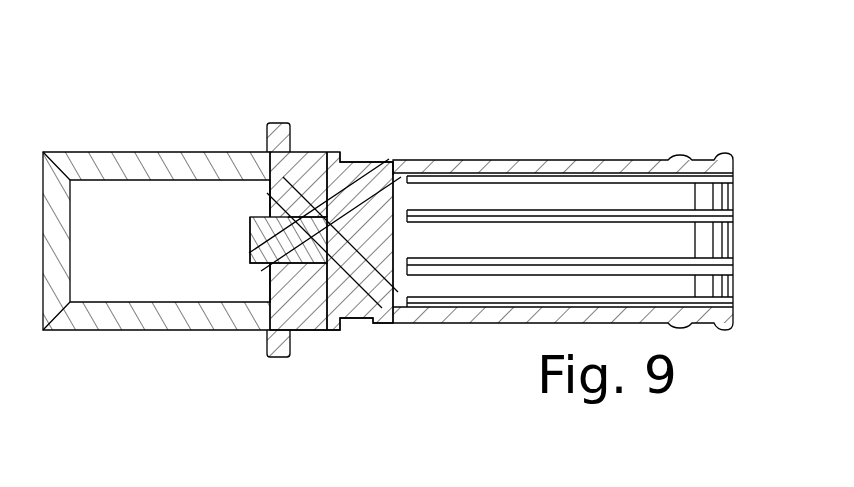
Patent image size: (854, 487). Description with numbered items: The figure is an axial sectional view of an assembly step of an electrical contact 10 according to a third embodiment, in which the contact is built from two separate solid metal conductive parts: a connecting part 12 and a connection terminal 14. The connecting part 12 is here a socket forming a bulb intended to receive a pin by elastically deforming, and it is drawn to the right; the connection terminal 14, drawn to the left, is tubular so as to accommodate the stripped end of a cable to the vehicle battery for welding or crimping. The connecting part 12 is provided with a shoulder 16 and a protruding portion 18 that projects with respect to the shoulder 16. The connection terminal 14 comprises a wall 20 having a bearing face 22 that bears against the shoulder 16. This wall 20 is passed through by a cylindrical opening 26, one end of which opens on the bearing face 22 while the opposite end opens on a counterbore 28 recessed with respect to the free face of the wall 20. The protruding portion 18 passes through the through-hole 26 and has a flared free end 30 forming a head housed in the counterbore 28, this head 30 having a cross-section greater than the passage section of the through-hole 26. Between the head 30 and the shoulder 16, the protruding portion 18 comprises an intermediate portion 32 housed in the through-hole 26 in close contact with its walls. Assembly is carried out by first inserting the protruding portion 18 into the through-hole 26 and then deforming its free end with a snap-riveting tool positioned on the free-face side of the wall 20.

The electrical contact 10 is at (464, 98).
The connecting part 12 is at (573, 160).
The connection terminal 14 is at (105, 157).
The shoulder 16 is at (327, 197).
The protruding portion 18 is at (247, 403).
The wall 20 is at (303, 297).
The bearing face 22 is at (312, 182).
The cylindrical opening 26 is at (310, 254).
The counterbore 28 is at (280, 210).
The flared free end 30 is at (250, 237).
The intermediate portion 32 is at (290, 237).